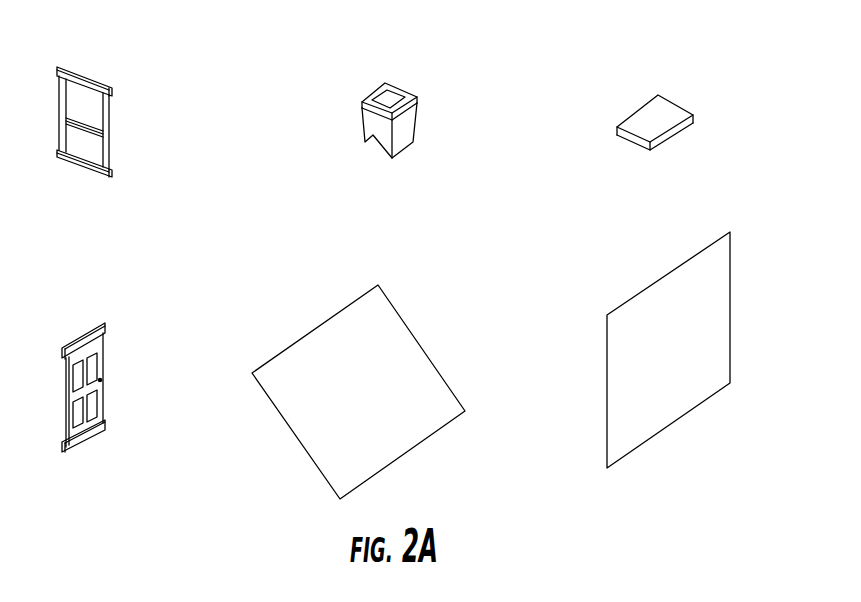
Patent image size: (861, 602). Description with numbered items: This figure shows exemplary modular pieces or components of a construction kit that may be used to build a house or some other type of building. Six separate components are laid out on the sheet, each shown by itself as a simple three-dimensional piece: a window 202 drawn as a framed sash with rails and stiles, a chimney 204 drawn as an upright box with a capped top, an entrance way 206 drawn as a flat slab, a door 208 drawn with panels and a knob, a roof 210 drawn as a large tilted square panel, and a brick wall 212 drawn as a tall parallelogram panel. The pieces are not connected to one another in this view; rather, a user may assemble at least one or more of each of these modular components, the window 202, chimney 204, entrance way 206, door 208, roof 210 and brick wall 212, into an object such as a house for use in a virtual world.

The window 202 is at (105, 83).
The chimney 204 is at (410, 92).
The entrance way 206 is at (682, 102).
The door 208 is at (105, 322).
The roof 210 is at (407, 322).
The brick wall 212 is at (727, 230).